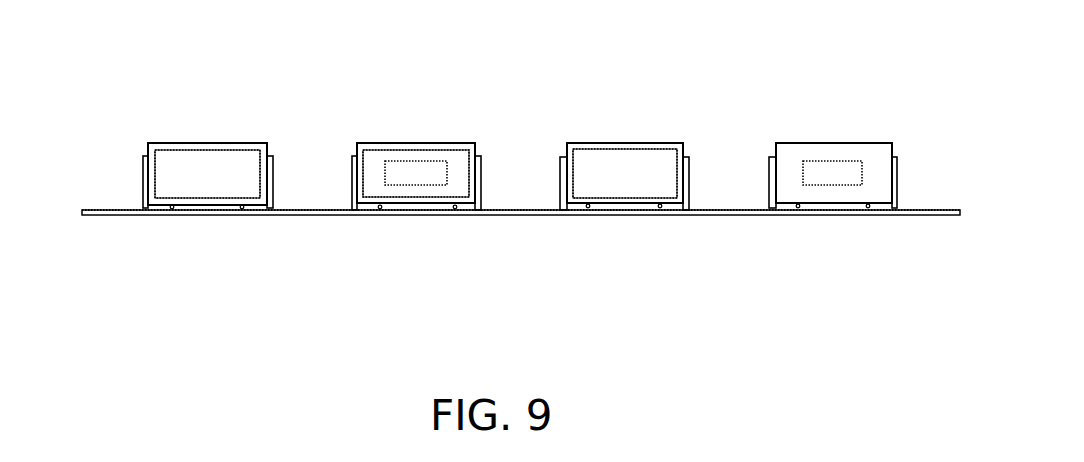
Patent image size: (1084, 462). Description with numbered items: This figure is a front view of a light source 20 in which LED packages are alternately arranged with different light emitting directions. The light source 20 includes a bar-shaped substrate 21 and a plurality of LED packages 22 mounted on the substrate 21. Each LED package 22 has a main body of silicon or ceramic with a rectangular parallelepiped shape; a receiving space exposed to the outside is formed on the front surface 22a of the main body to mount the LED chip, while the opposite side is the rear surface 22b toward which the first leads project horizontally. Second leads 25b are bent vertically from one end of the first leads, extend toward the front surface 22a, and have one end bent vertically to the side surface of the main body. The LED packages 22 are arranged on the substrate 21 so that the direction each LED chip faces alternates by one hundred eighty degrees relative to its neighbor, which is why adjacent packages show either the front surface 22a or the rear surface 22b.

The light source 20 is at (201, 133).
The substrate 21 is at (515, 212).
The LED package 22 is at (383, 148).
The front surface 22a is at (203, 177).
The rear surface 22b is at (415, 177).
The second lead 25b is at (147, 185).